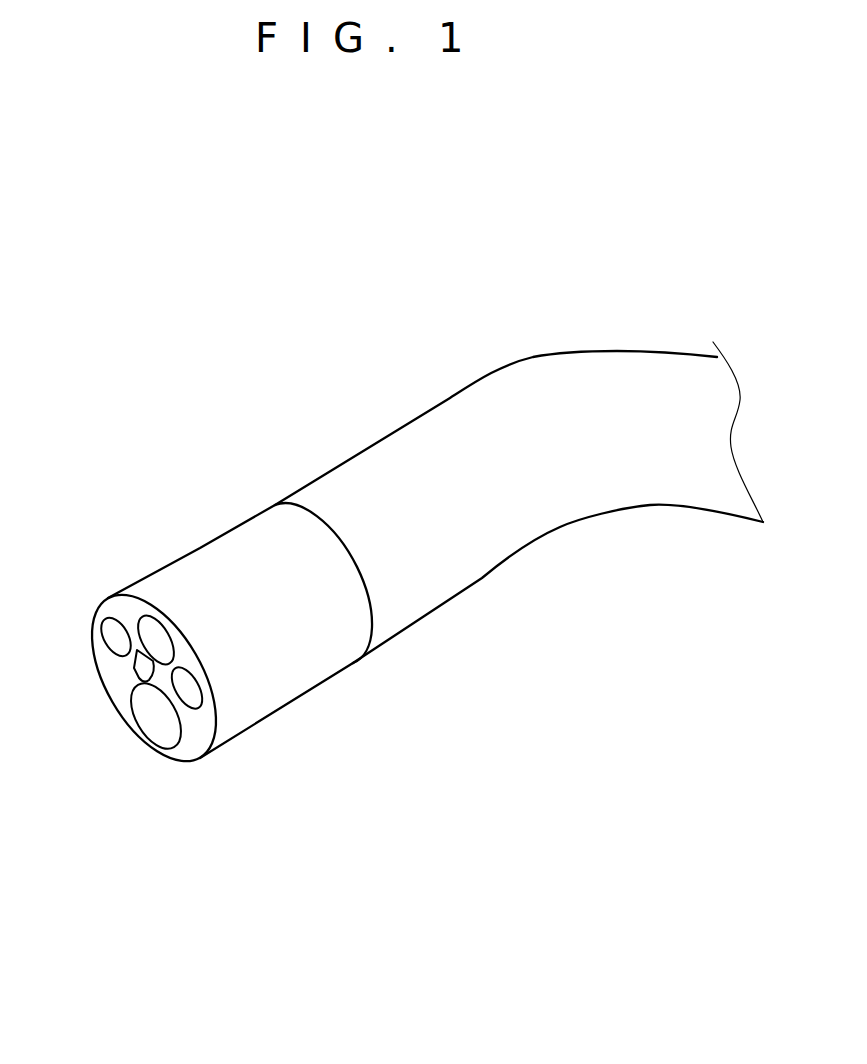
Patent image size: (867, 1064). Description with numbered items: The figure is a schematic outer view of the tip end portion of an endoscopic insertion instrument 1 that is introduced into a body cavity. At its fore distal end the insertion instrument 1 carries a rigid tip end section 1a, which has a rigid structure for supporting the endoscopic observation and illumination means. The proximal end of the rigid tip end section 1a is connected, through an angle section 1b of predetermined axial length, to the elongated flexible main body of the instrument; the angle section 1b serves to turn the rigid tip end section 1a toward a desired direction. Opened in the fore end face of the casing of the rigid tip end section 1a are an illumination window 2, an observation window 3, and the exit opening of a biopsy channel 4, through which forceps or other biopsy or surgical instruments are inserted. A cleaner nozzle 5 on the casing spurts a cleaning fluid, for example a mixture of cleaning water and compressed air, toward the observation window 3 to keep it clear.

The insertion instrument 1 is at (414, 476).
The rigid tip end section 1a is at (320, 647).
The angle section 1b is at (562, 515).
The illumination window 2 is at (115, 645).
The observation window 3 is at (156, 632).
The biopsy channel 4 is at (158, 725).
The cleaner nozzle 5 is at (145, 671).